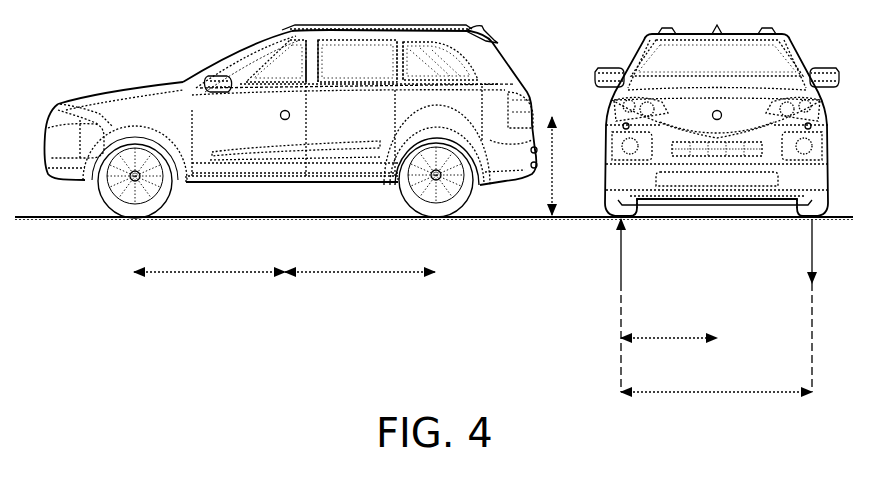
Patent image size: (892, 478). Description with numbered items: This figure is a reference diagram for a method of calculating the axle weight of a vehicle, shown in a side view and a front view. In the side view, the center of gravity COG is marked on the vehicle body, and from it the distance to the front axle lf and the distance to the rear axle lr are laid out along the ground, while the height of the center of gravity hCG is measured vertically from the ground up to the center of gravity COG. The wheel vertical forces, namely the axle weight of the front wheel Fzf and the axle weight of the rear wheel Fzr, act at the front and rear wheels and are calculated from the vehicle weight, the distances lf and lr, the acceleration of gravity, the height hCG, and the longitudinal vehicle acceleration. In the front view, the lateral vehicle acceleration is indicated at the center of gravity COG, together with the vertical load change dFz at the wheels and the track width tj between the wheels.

The center of gravity COG is at (285, 278).
The height of the center of gravity hCG is at (572, 166).
The distance from the center of gravity to the front axle lf is at (209, 255).
The distance from the center of gravity to the rear axle lr is at (360, 255).
The axle weight of the front wheel Fzf is at (134, 278).
The axle weight of the rear wheel Fzr is at (435, 278).
The vertical load transfer dFz is at (676, 305).
The track width tj is at (716, 347).